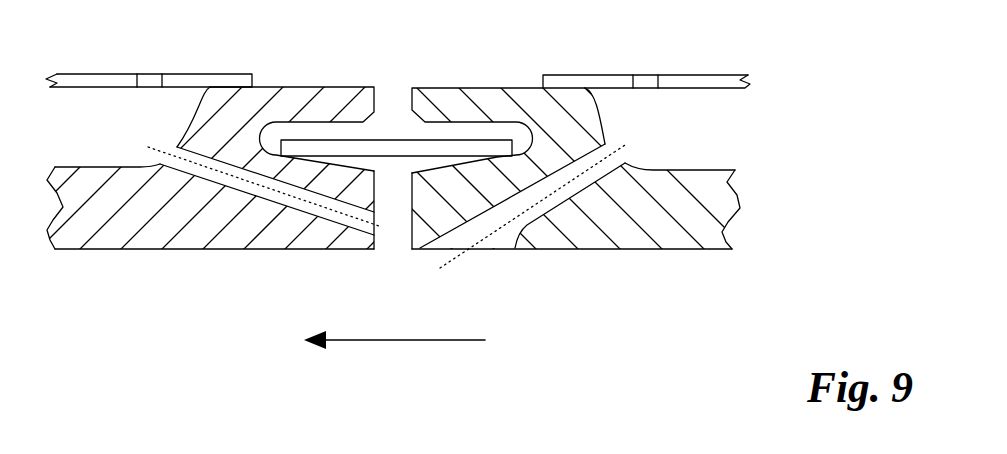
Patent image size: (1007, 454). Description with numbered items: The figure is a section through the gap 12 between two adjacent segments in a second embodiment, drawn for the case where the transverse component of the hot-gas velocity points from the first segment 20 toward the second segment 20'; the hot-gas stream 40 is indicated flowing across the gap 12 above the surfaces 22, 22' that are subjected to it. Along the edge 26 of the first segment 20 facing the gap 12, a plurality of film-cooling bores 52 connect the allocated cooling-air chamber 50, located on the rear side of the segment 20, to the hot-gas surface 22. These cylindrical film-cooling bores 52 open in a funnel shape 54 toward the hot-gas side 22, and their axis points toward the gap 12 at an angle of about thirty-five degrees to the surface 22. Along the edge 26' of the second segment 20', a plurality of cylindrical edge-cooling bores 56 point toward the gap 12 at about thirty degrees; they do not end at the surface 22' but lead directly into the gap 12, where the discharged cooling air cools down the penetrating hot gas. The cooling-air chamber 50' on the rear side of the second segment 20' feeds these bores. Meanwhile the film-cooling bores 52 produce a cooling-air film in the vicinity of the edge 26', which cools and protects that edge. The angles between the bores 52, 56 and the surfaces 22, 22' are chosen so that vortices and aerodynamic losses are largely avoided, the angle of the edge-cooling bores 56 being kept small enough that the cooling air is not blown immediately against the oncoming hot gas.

The gap 12 is at (396, 165).
The first segment 20 is at (476, 168).
The second segment 20' is at (295, 168).
The surface subjected to the hot-gas stream 22 is at (572, 272).
The surface subjected to the hot-gas stream 22' is at (208, 285).
The edge of the first segment 26 is at (406, 233).
The edge of the second segment 26' is at (360, 233).
The hot gas flow 40 is at (394, 357).
The cooling-air chamber 50 is at (646, 100).
The adjacent cover / impingement plate 50' is at (149, 98).
The film-cooling bores 52 is at (530, 220).
The funnel-shaped opening 54 is at (474, 224).
The edge-cooling bores 56 is at (297, 205).